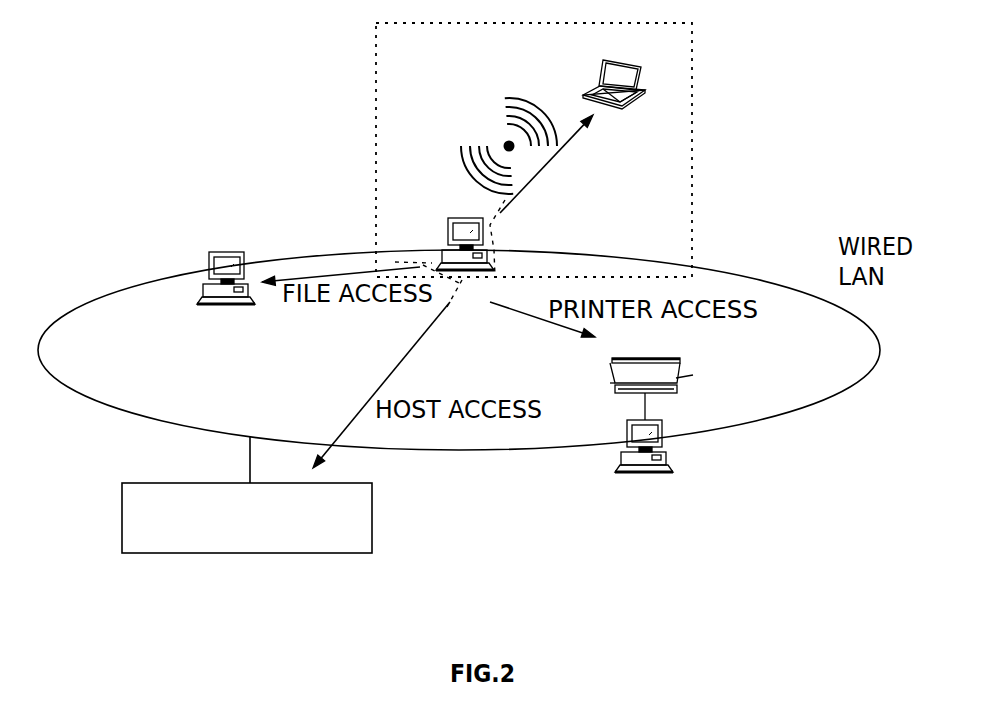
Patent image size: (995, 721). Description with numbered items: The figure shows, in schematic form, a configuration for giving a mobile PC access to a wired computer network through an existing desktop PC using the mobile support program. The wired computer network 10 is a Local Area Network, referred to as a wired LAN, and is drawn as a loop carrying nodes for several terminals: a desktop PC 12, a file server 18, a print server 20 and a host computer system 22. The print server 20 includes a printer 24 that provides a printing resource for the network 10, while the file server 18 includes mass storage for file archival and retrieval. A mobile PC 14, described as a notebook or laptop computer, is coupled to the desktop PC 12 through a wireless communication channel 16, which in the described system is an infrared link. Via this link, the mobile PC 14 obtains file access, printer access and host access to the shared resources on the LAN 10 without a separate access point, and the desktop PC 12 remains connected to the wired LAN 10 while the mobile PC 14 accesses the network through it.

The wired computer network 10 is at (755, 273).
The desktop PC 12 is at (448, 225).
The mobile PC 14 is at (590, 92).
The wireless communication channel 16 is at (478, 121).
The file server 18 is at (245, 243).
The print server 20 is at (660, 420).
The host computer system 22 is at (374, 497).
The printer 24 is at (667, 357).